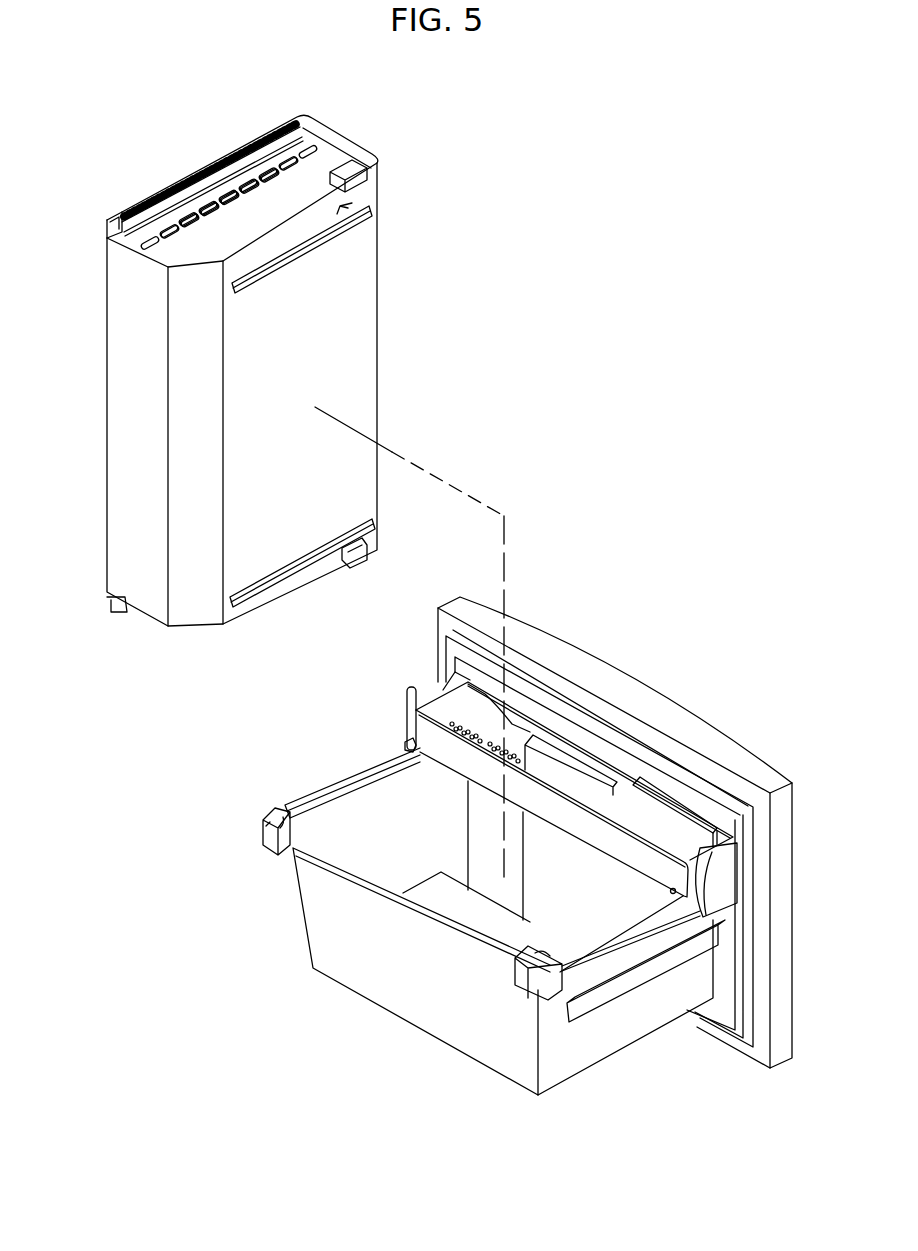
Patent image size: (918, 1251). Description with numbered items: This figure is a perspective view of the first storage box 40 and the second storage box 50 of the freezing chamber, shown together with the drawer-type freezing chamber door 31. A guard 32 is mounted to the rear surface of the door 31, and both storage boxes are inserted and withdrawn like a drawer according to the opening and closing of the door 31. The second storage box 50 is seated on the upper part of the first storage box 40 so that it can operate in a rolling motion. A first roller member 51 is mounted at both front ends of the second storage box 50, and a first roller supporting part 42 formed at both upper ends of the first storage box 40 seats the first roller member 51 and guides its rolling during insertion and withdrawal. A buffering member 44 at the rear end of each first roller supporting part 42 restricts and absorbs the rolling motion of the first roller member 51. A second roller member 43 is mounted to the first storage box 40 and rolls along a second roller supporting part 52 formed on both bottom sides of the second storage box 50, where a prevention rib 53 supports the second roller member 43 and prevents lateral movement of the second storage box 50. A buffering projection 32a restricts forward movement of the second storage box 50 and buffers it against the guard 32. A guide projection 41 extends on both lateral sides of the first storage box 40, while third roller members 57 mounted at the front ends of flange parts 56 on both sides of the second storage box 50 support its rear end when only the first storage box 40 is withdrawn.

The freezing chamber door 31 is at (665, 712).
The guard 32 is at (422, 692).
The buffering projection 32a is at (405, 743).
The first storage box 40 is at (476, 927).
The guide projection 41 is at (607, 995).
The first roller supporting part 42 is at (360, 784).
The second roller member 43 is at (280, 815).
The buffering member 44 is at (553, 980).
The second storage box 50 is at (290, 499).
The first roller member 51 is at (357, 163).
The second roller supporting part 52 is at (338, 210).
The prevention rib 53 is at (369, 208).
The flange part 56 is at (143, 220).
The third roller member 57 is at (110, 221).